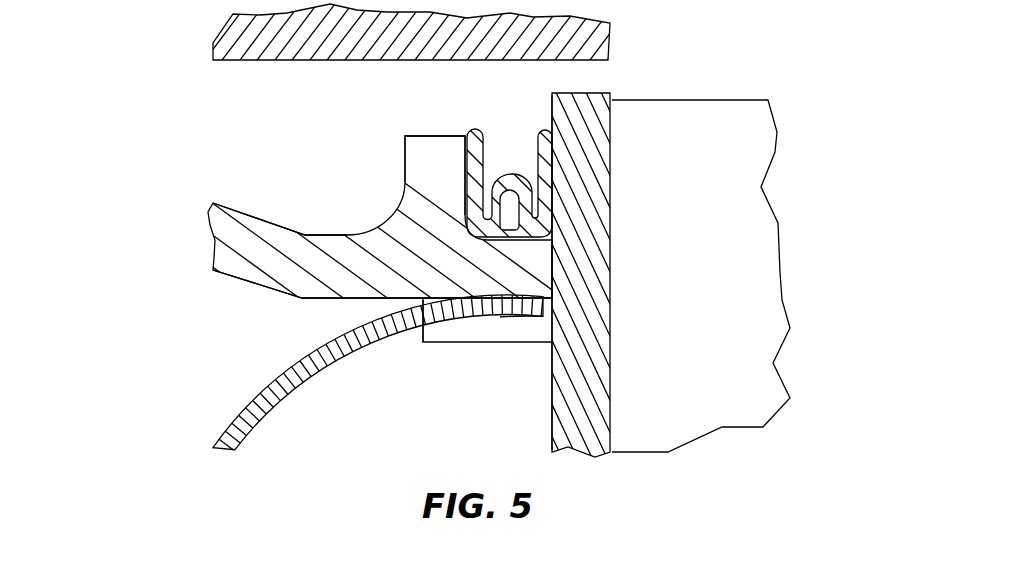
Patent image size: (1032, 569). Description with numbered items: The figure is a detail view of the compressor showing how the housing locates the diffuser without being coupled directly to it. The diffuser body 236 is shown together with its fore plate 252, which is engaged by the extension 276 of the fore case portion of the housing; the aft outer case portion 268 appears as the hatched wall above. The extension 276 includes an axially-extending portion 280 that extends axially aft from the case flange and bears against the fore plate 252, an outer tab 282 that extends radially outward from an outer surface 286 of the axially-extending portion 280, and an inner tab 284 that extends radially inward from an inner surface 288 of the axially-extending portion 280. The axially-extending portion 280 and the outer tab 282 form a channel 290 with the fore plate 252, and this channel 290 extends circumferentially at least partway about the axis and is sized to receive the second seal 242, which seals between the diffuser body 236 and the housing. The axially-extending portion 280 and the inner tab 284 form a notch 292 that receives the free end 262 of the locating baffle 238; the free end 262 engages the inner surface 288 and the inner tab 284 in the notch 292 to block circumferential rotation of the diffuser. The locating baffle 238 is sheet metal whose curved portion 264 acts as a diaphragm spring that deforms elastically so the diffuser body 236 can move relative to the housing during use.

The aft outer case portion 268 is at (251, 73).
The extension 276 is at (165, 190).
The axially-extending portion 280 is at (196, 291).
The outer tab 282 is at (382, 150).
The outer surface 286 is at (330, 235).
The inner surface 288 is at (320, 300).
The channel 290 is at (506, 147).
The notch 292 is at (478, 345).
The inner tab 284 is at (418, 355).
The free end 262 is at (525, 338).
The locating baffle 238 is at (277, 470).
The curved portion 264 is at (300, 412).
The diffuser body 236 is at (806, 249).
The fore plate 252 is at (637, 339).
The second seal 242 is at (566, 145).